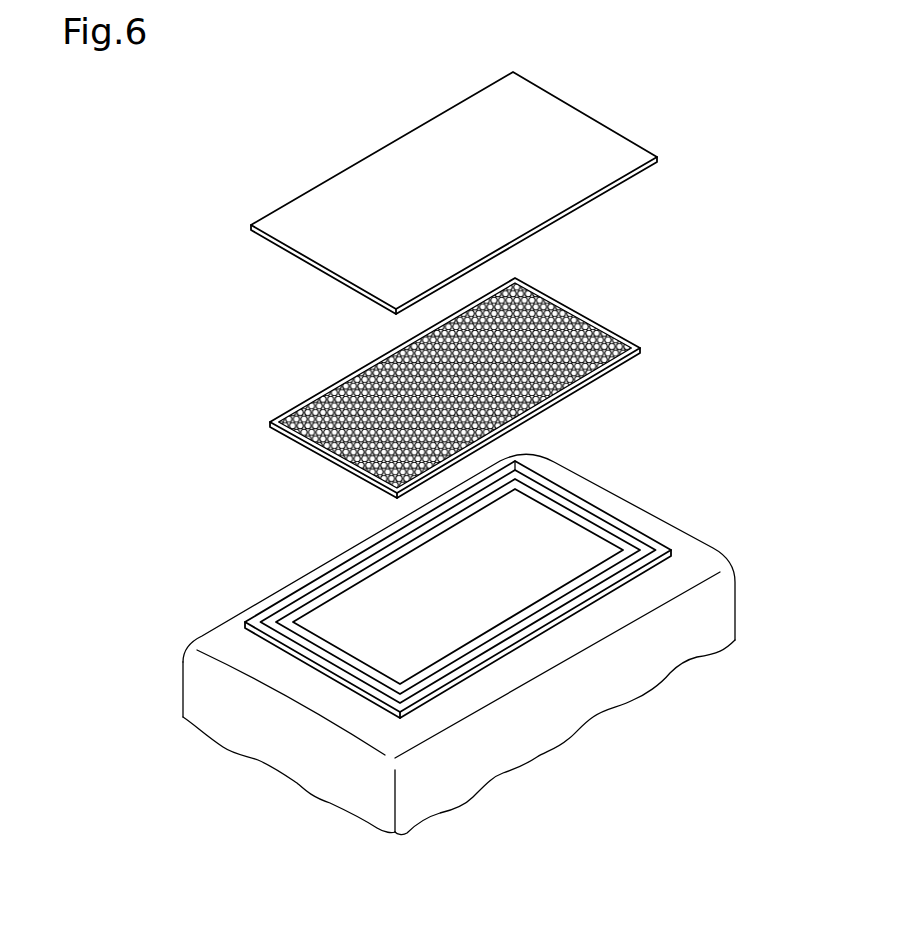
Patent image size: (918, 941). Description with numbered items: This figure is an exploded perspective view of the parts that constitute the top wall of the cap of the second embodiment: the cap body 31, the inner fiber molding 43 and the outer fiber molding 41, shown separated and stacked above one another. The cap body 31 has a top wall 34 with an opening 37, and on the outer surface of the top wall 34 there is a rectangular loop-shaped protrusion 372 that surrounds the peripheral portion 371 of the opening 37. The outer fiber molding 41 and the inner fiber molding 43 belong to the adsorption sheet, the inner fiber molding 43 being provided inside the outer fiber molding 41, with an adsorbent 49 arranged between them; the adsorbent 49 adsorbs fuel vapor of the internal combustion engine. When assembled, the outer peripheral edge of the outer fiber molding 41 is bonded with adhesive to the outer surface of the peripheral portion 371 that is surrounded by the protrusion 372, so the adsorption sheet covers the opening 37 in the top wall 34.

The cap body 31 is at (471, 623).
The top wall 34 is at (693, 549).
The opening 37 is at (479, 589).
The peripheral portion 371 is at (604, 529).
The protrusion 372 is at (343, 557).
The outer fiber molding 41 is at (568, 123).
The inner fiber molding 43 is at (614, 333).
The adsorbent 49 is at (543, 311).